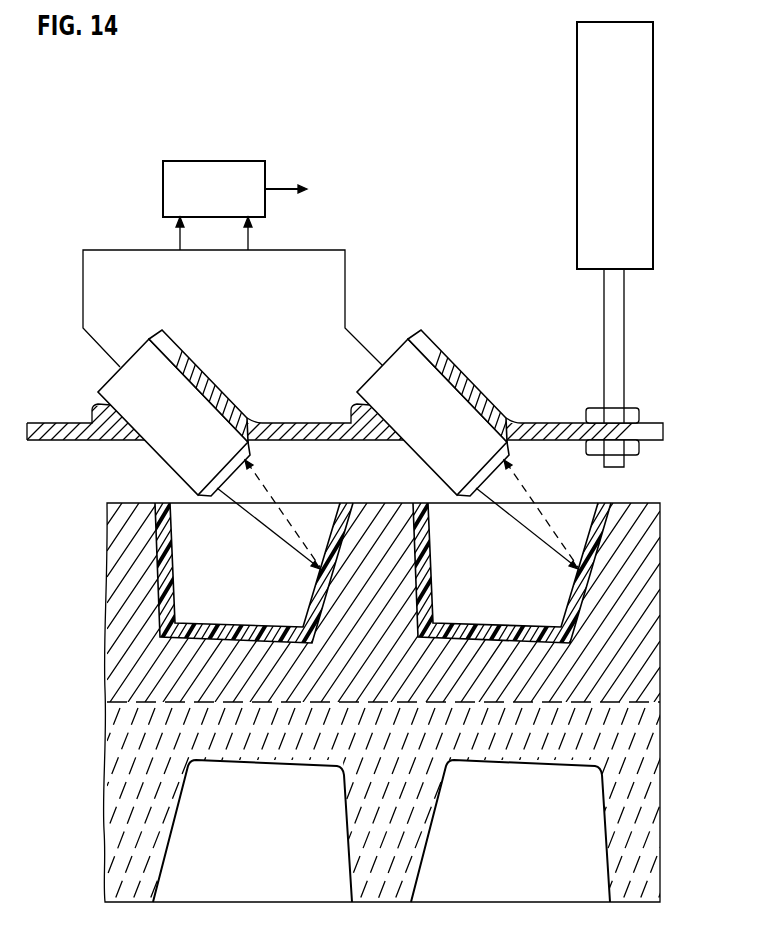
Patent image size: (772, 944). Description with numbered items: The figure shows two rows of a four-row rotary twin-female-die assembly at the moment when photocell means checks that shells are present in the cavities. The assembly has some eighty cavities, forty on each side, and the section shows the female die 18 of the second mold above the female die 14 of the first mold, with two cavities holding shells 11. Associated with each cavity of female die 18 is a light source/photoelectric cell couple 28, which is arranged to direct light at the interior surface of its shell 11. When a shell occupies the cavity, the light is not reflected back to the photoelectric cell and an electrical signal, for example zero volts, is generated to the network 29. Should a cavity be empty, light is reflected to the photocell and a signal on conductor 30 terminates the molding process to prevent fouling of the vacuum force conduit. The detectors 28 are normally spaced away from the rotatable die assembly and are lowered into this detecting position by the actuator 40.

The shell 11 is at (176, 578).
The female die 14 is at (643, 837).
The female die 18 is at (635, 633).
The light source/photoelectric cell couple 28 is at (177, 393).
The network 29 is at (213, 167).
The conductor 30 is at (278, 185).
The actuator 40 is at (585, 113).